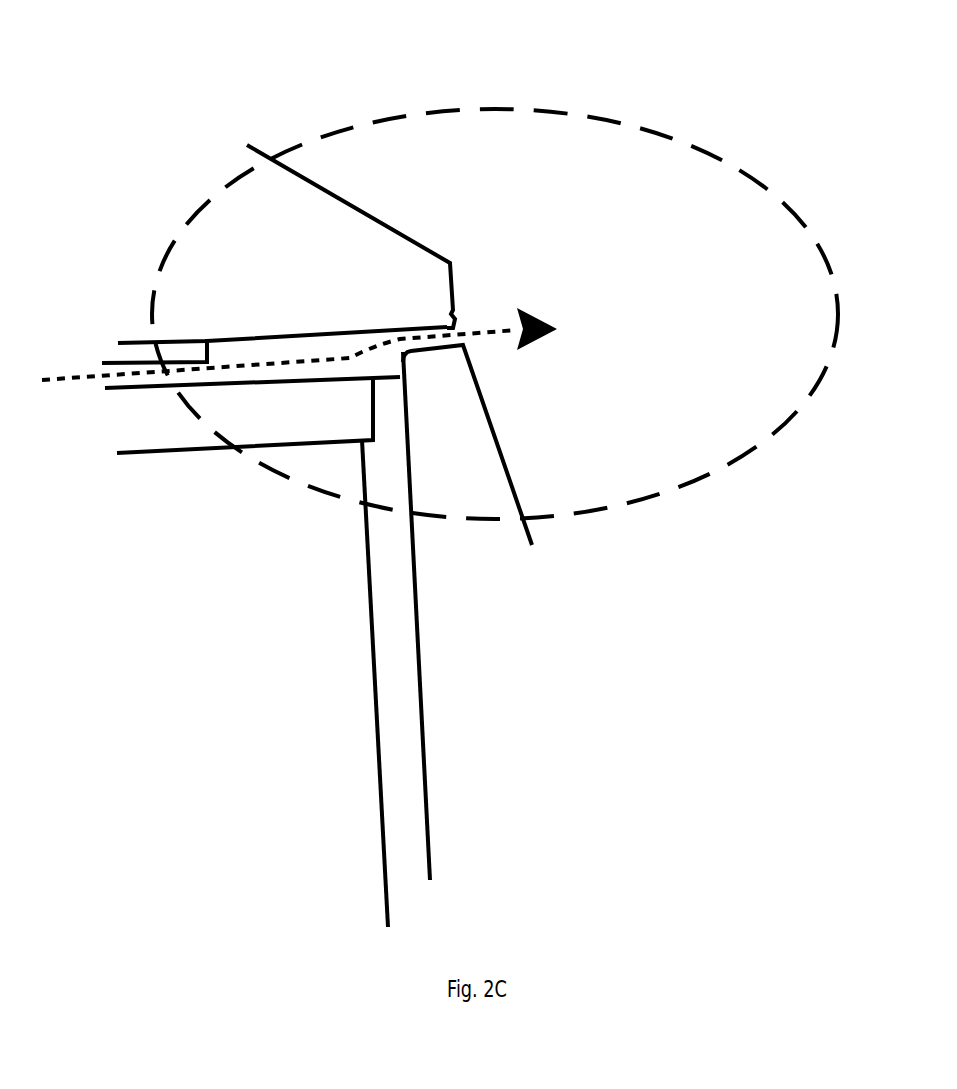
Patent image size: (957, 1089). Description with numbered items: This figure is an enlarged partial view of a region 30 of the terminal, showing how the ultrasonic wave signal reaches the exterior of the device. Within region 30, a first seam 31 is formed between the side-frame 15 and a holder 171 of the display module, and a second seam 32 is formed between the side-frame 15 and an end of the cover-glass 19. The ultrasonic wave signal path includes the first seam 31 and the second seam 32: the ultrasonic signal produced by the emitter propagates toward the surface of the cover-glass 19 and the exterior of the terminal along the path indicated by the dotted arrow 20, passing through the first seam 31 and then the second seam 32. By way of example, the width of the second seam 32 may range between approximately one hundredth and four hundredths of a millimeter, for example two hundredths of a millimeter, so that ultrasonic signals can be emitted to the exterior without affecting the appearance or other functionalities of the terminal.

The side-frame 15 is at (247, 218).
The cover-glass 19 is at (443, 378).
The dotted arrow 20 is at (357, 352).
The region 30 is at (740, 242).
The first seam 31 is at (282, 353).
The second seam 32 is at (433, 343).
The holder 171 is at (293, 415).